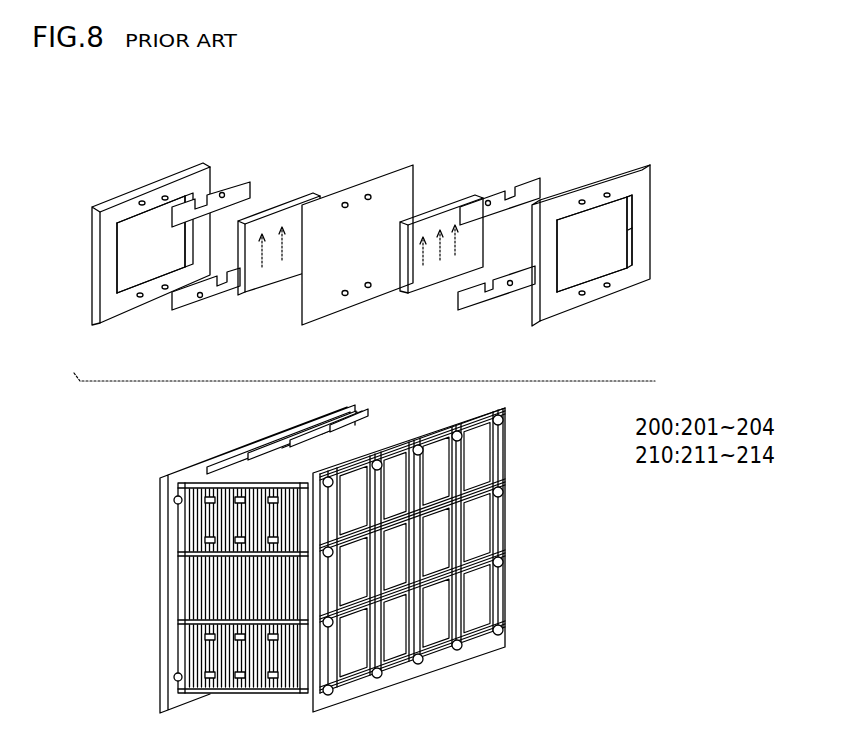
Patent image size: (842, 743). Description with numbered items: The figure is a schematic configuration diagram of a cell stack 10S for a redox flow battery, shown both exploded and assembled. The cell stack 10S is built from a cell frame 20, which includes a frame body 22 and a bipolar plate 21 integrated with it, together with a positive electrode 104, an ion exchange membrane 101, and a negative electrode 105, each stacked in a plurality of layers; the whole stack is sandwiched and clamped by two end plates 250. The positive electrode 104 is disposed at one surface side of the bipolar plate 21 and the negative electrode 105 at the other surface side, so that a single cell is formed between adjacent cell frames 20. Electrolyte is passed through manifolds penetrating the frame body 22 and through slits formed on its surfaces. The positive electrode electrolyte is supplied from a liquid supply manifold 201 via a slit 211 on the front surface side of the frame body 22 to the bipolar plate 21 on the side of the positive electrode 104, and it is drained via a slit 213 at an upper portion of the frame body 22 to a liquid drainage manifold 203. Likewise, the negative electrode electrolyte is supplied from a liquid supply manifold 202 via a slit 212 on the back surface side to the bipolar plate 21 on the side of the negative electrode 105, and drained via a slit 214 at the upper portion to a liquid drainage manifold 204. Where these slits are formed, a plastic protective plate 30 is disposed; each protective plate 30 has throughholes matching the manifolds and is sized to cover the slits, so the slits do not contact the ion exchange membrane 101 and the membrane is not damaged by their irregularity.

The cell stack 10S is at (513, 528).
The cell frame 20 is at (218, 168).
The bipolar plate 21 is at (633, 204).
The frame body 22 is at (634, 246).
The protective plate 30 is at (254, 185).
The ion exchange membrane 101 is at (372, 180).
The positive electrode 104 is at (252, 292).
The negative electrode 105 is at (418, 300).
The liquid supply manifold 201 is at (139, 298).
The liquid supply manifold 202 is at (164, 291).
The liquid drainage manifold 203 is at (165, 195).
The liquid drainage manifold 204 is at (140, 200).
The slit 211 is at (112, 313).
The slit 212 is at (174, 298).
The slit 213 is at (189, 192).
The slit 214 is at (118, 208).
The end plate 250 is at (160, 480).